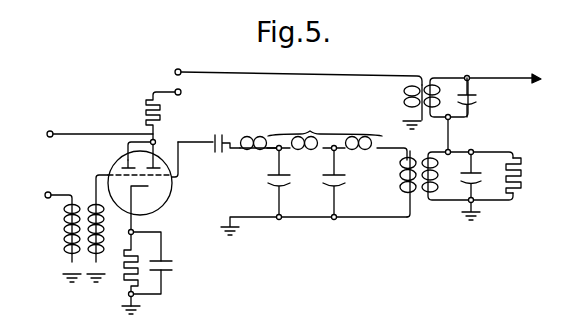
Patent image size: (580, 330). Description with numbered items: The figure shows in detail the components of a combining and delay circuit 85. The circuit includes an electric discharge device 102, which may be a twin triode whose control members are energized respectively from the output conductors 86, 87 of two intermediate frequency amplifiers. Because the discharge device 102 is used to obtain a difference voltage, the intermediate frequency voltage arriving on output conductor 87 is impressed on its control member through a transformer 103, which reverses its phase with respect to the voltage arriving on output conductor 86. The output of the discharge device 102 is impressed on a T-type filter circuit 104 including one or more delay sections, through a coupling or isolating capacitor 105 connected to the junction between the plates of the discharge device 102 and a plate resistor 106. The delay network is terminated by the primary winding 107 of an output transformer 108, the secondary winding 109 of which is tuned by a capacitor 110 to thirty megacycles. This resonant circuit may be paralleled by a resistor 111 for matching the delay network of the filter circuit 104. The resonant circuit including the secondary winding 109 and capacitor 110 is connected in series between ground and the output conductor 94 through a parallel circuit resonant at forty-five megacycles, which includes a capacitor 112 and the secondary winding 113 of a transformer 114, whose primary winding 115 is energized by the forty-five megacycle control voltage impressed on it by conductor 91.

The combining and delay circuit 85 is at (320, 260).
The output conductor 86 is at (52, 131).
The output conductor 87 is at (46, 198).
The conductor 91 is at (213, 71).
The output conductor 94 is at (505, 77).
The electric discharge device 102 is at (171, 200).
The transformer 103 is at (94, 306).
The T-type filter circuit 104 is at (317, 128).
The coupling or isolating capacitor 105 is at (217, 134).
The plate resistor 106 is at (165, 112).
The primary winding 107 is at (404, 186).
The output transformer 108 is at (438, 221).
The secondary winding 109 is at (446, 151).
The capacitor 110 is at (484, 176).
The resistor 111 is at (523, 174).
The capacitor 112 is at (478, 100).
The secondary winding 113 is at (442, 86).
The transformer 114 is at (442, 93).
The primary winding 115 is at (404, 93).